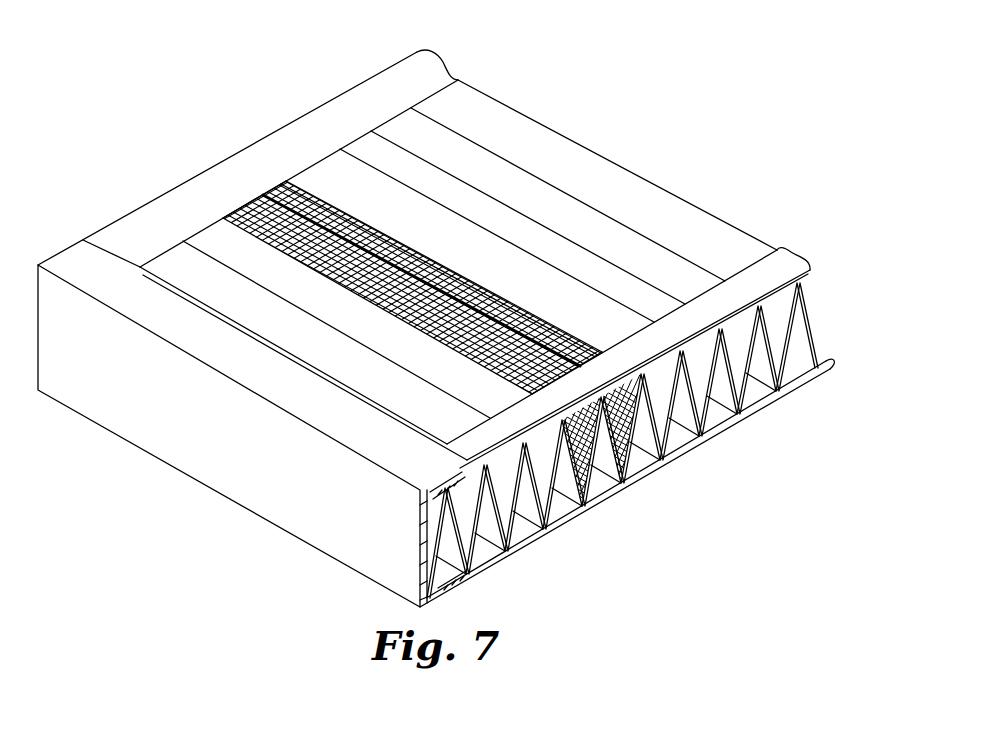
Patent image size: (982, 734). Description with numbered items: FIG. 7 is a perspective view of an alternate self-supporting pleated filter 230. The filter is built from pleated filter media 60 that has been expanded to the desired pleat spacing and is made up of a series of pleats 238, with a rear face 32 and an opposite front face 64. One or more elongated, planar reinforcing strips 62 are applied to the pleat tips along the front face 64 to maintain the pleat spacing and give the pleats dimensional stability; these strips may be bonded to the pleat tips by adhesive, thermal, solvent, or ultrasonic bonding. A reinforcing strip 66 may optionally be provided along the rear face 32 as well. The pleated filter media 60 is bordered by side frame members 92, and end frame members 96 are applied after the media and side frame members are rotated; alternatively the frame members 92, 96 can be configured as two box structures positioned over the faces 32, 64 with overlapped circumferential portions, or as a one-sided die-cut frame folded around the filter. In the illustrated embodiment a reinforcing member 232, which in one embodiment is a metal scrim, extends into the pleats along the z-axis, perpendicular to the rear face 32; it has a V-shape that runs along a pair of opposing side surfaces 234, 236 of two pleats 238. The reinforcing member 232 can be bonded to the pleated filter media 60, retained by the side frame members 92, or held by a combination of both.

The self-supporting pleated filter 230 is at (612, 48).
The rear face 32 is at (496, 108).
The pleated filter media 60 is at (614, 158).
The reinforcing strip 66 is at (773, 263).
The side frame members 92 is at (247, 157).
The end frame members 96 is at (230, 486).
The reinforcing strips 62 is at (796, 375).
The front face 64 is at (767, 412).
The pleats 238 is at (779, 311).
The reinforcing member 232 is at (634, 457).
The side surface 234 is at (612, 445).
The side surface 236 is at (632, 463).